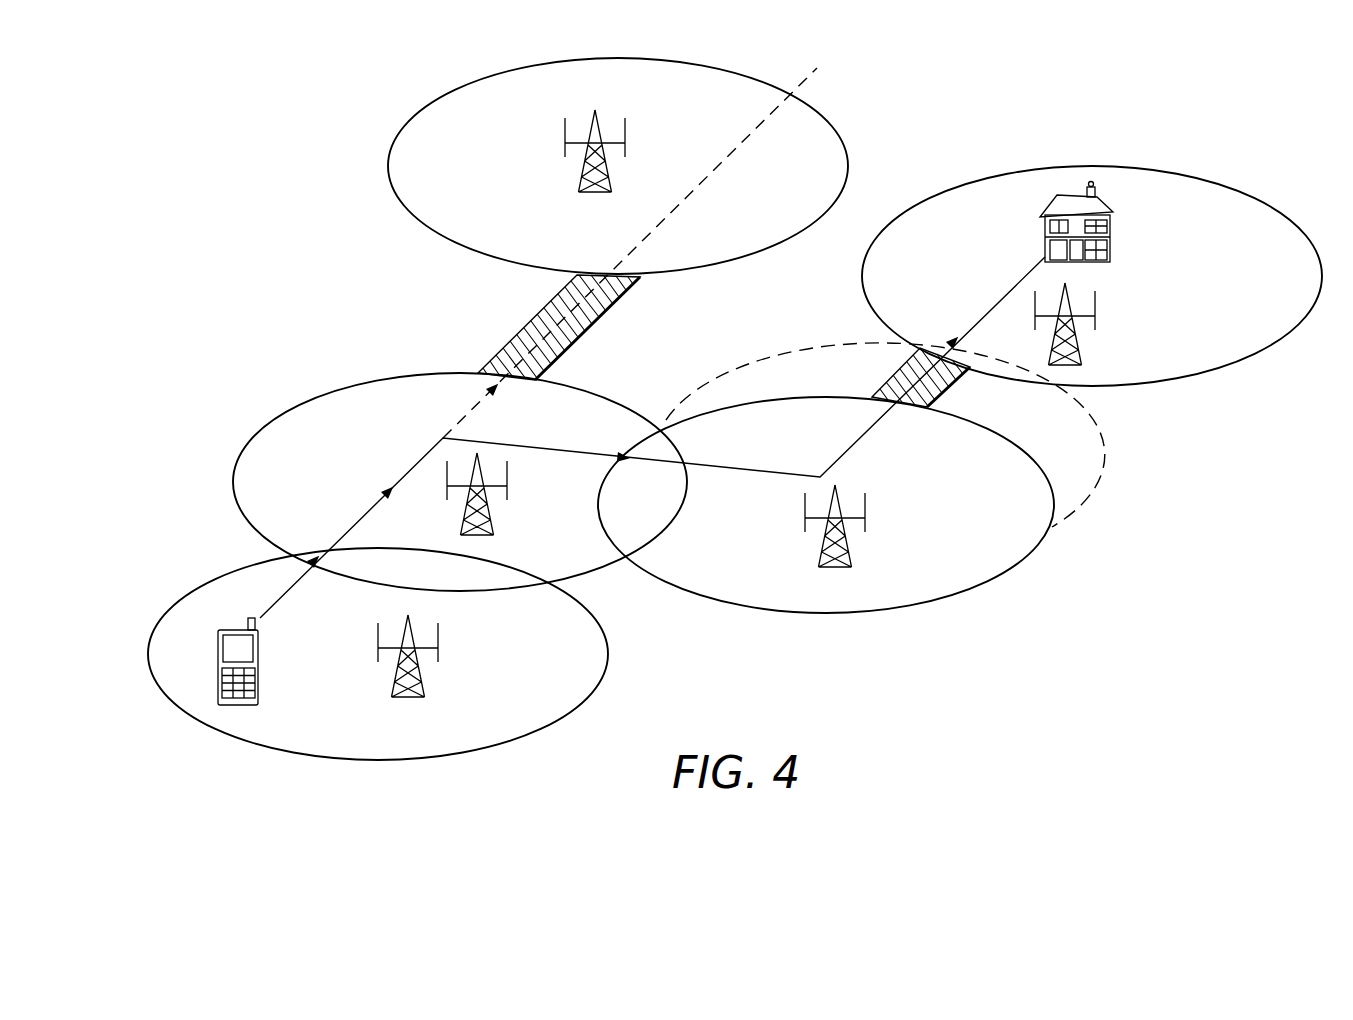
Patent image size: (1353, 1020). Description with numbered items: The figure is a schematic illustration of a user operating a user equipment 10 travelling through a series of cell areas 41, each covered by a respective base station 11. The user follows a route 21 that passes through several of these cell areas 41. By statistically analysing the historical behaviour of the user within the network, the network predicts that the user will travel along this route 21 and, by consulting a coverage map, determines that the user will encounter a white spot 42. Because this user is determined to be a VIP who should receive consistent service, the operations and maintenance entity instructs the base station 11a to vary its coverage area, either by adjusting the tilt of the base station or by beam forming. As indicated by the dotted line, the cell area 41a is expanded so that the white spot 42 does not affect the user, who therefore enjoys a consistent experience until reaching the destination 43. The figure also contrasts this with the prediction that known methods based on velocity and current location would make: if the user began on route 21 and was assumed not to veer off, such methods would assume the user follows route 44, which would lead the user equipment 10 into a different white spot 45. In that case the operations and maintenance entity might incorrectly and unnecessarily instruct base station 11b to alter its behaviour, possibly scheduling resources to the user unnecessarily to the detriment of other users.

The user equipment 10 is at (258, 641).
The base station 11 is at (582, 176).
The base station 11a is at (850, 548).
The base station 11b is at (494, 518).
The route 21 is at (375, 505).
The cell area 41 is at (748, 77).
The cell area 41a is at (980, 588).
The white spot 42 is at (890, 378).
The destination 43 is at (1112, 243).
The route 44 is at (458, 423).
The white spot 45 is at (520, 325).